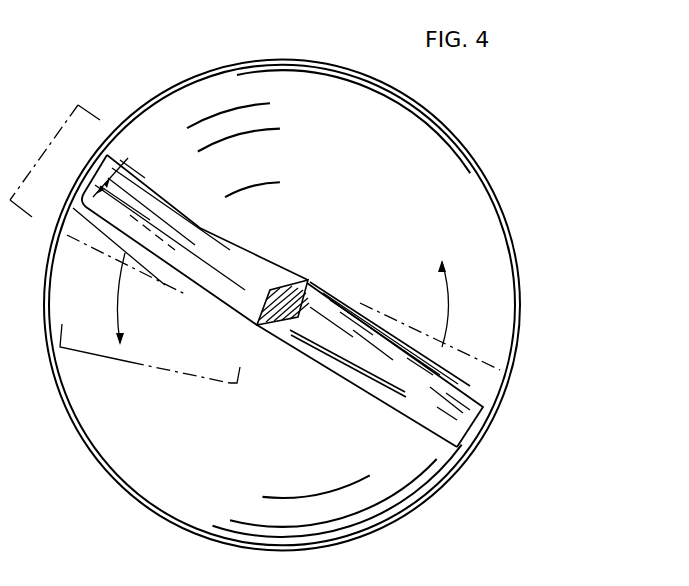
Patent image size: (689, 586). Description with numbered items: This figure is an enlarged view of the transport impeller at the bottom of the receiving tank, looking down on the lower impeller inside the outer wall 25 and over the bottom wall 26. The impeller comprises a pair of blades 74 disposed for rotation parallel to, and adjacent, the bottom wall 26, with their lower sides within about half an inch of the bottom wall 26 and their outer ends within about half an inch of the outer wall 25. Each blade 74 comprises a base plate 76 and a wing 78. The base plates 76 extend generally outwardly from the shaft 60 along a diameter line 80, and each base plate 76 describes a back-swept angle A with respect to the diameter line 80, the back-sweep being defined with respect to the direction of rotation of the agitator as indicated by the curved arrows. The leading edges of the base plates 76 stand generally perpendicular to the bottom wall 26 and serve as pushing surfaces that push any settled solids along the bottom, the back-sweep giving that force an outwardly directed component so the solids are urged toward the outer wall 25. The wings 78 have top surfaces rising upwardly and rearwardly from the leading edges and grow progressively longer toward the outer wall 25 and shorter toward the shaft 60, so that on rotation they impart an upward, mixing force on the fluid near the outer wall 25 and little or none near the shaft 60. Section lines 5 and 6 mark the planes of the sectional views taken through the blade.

The outer wall 25 is at (515, 303).
The bottom wall 26 is at (244, 457).
The shaft 60 is at (285, 282).
The diameter line 80 is at (475, 393).
The blades 74 is at (302, 350).
The base plate 76 is at (347, 368).
The wing 78 is at (407, 390).
The section line 5- 5 is at (156, 345).
The section line 6- 6 is at (66, 175).
The back-swept angle A is at (122, 172).